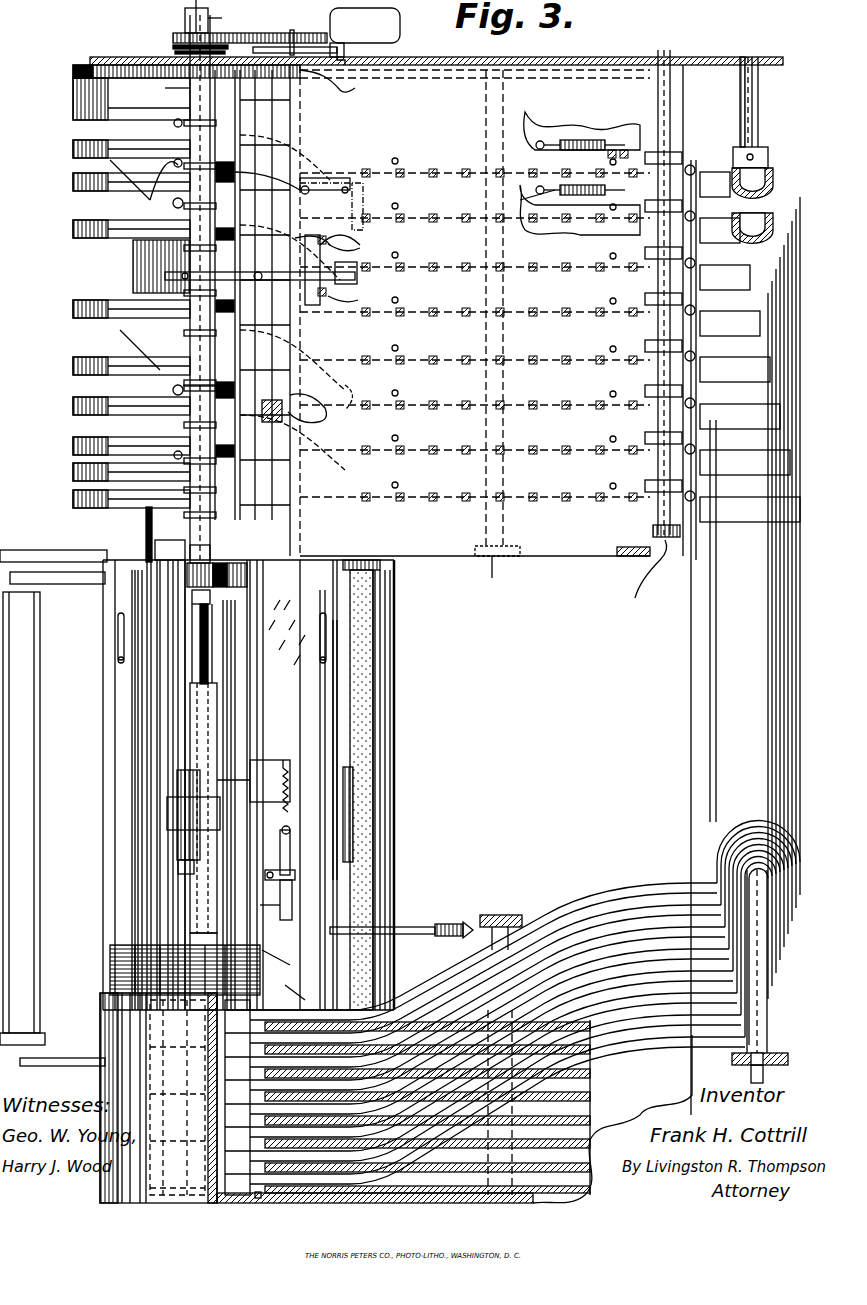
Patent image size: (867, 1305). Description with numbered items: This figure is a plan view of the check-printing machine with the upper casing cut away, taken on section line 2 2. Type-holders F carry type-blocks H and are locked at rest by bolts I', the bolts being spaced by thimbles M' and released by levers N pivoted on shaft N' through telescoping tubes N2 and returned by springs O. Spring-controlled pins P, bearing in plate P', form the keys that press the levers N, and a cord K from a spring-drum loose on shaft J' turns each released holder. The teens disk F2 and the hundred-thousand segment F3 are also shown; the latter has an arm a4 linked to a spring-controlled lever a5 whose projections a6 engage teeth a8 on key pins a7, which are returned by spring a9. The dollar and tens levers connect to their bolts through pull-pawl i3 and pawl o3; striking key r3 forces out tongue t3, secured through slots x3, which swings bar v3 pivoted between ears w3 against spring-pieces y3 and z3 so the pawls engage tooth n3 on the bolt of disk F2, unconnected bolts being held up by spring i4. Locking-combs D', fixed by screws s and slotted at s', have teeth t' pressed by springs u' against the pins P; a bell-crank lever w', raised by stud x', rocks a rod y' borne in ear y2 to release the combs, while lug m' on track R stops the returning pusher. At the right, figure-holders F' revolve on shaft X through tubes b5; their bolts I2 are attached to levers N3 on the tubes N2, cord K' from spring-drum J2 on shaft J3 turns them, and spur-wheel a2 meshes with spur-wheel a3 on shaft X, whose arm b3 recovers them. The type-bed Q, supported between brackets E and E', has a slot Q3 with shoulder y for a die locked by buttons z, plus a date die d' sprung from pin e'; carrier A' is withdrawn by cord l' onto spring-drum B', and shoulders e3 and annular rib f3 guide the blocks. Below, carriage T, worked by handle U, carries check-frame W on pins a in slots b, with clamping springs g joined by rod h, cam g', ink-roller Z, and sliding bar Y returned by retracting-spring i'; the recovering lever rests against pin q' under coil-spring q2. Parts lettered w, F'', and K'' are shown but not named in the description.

The track R is at (185, 20).
The section line 2 2 is at (237, 606).
The coil-spring q2 is at (176, 40).
The pin q' is at (278, 32).
The stud x' is at (299, 37).
The bracket E' is at (259, 473).
The annular rib f3 is at (73, 68).
The bell-crank lever w' is at (344, 83).
The figure-holders F' is at (131, 158).
The thimbles M' is at (180, 93).
The teens holder F2 is at (78, 190).
The type-holders F is at (117, 324).
The segmented holder F3 is at (133, 272).
The flexible cord K is at (135, 265).
The bolts I' is at (188, 287).
The spring i4 is at (178, 124).
The pull-pawl i3 is at (164, 190).
The tooth n3 is at (200, 397).
The tongue t3 is at (271, 430).
The type-blocks H is at (265, 95).
The levers N is at (473, 308).
The ears w3 is at (331, 197).
The pawl o3 is at (322, 252).
The spring-piece z3 is at (273, 268).
The bar v3 is at (290, 301).
The spring-piece y3 is at (312, 341).
The projections a6 is at (336, 228).
The teeth a8 is at (329, 276).
The spring-controlled pins a7 is at (350, 271).
The lug m' is at (261, 267).
The spring-controlled lever a5 is at (185, 272).
The spring a9 is at (265, 282).
The arm a4 is at (287, 299).
The slots x3 is at (300, 422).
The key r3 is at (366, 216).
The side standard B' is at (404, 469).
The spring-controlled pins P is at (475, 345).
The shaft J' is at (497, 576).
The plate P' is at (572, 124).
The springs u' is at (615, 342).
The teeth t' is at (567, 159).
The locking-combs D' is at (567, 187).
The link w is at (540, 219).
The screws s is at (622, 144).
The slots s' is at (636, 144).
The rod y' is at (678, 303).
The springs O is at (747, 347).
The shaft N' is at (768, 570).
The tubes N2 is at (675, 860).
The ear y2 is at (644, 573).
The levers N3 is at (575, 960).
The shaft J3 is at (500, 927).
The spring-drum J2 is at (590, 1160).
The bracket E is at (157, 808).
The handle U is at (21, 812).
The sliding bar Y is at (145, 535).
The springs g is at (170, 761).
The check-frame W is at (125, 840).
The carriage T is at (110, 887).
The rod h is at (120, 737).
The slots b is at (118, 640).
The pins a is at (118, 661).
The spur-wheel a3 is at (250, 580).
The spur-wheel a2 is at (205, 570).
The retracting-spring i' is at (184, 603).
The type-bed Q is at (190, 658).
The type-block carrier A' is at (186, 807).
The shaft X is at (245, 658).
The pin e' is at (270, 767).
The cord l' is at (240, 781).
The date die d' is at (270, 824).
The cam g' is at (327, 750).
The shoulders e3 is at (353, 835).
The ink-roller Z is at (375, 800).
The buttons z is at (273, 870).
The slot Q3 is at (280, 890).
The shoulder y is at (267, 908).
The block F'' is at (163, 970).
The arm b3 is at (276, 956).
The tubes b5 is at (294, 984).
The bolts I2 is at (215, 1030).
The wall K'' is at (350, 1098).
The flexible cord K' is at (320, 1071).